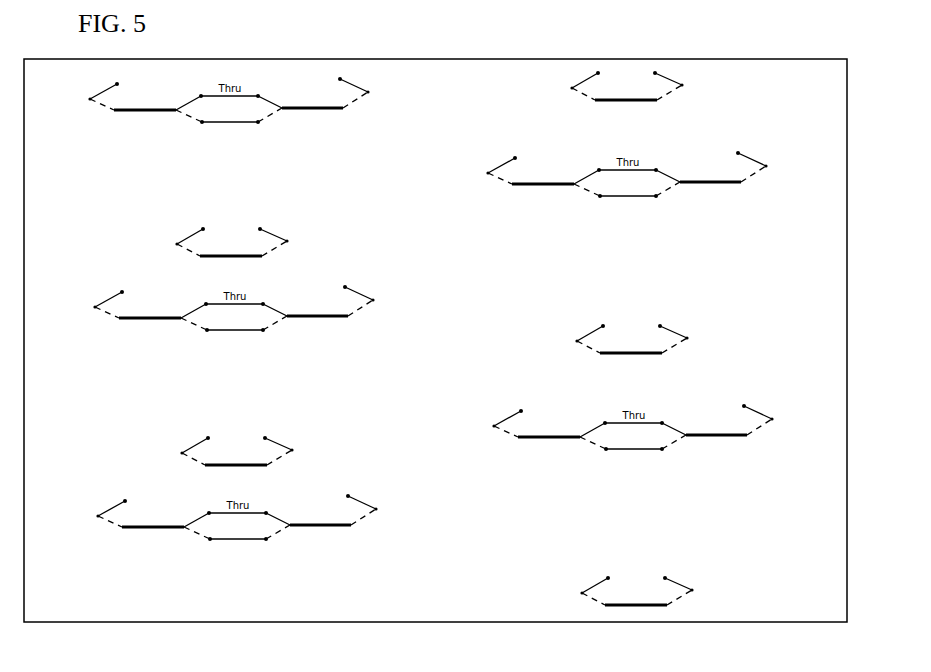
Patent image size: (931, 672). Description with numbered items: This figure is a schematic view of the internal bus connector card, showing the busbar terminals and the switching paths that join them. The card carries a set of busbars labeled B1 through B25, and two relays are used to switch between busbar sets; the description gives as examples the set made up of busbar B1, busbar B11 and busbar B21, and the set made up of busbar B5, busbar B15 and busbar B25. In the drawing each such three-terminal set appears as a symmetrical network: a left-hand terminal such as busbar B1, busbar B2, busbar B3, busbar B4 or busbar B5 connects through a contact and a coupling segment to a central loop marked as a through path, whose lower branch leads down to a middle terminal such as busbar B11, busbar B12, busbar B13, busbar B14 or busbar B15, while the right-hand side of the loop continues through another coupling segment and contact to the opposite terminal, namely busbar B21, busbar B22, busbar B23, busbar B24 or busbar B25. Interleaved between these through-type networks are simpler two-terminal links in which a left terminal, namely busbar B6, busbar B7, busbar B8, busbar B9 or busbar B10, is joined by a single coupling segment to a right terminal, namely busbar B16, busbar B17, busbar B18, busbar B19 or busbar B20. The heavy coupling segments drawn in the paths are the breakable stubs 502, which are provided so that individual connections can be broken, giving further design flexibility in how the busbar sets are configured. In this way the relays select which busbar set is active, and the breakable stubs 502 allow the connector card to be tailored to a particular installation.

The breakable stubs 502 is at (133, 117).
The busbar B1 is at (90, 99).
The busbar B2 is at (488, 173).
The busbar B3 is at (95, 307).
The busbar B4 is at (494, 426).
The busbar B5 is at (98, 516).
The busbar B6 is at (582, 593).
The busbar B7 is at (182, 453).
The busbar B8 is at (577, 341).
The busbar B9 is at (177, 244).
The busbar B10 is at (572, 88).
The busbar B11 is at (230, 122).
The busbar B12 is at (628, 196).
The busbar B13 is at (235, 330).
The busbar B14 is at (634, 449).
The busbar B15 is at (238, 539).
The busbar B16 is at (692, 590).
The busbar B17 is at (292, 450).
The busbar B18 is at (687, 338).
The busbar B19 is at (287, 241).
The busbar B20 is at (682, 85).
The busbar B21 is at (368, 92).
The busbar B22 is at (766, 166).
The busbar B23 is at (373, 300).
The busbar B24 is at (772, 419).
The busbar B25 is at (376, 509).